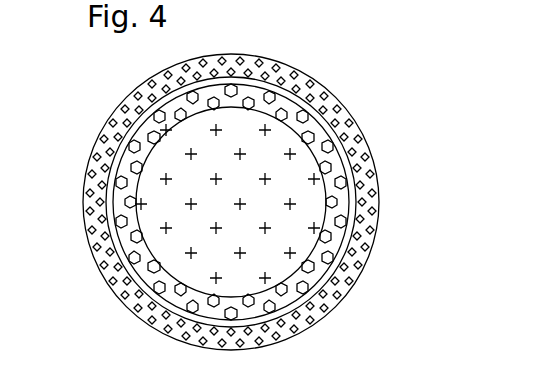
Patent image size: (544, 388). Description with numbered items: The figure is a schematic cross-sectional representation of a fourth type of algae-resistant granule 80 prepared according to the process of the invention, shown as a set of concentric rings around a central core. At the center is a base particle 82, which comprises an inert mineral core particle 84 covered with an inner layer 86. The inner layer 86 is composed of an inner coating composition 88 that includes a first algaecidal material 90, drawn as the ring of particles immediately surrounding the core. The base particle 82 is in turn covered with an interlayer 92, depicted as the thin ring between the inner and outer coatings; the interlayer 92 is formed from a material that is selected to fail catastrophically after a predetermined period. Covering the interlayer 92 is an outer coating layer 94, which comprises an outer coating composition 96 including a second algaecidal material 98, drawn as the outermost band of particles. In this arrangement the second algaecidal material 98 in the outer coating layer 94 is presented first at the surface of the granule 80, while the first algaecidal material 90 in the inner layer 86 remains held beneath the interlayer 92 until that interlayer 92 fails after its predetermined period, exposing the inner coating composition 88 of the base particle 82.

The algae-resistant granule 80 is at (105, 100).
The base particle 82 is at (122, 152).
The inert mineral core particle 84 is at (175, 198).
The inner layer 86 is at (117, 223).
The inner coating composition 88 is at (130, 253).
The first algaecidal material 90 is at (163, 327).
The interlayer 92 is at (322, 123).
The outer coating layer 94 is at (365, 153).
The outer coating composition 96 is at (370, 222).
The second algaecidal material 98 is at (342, 283).